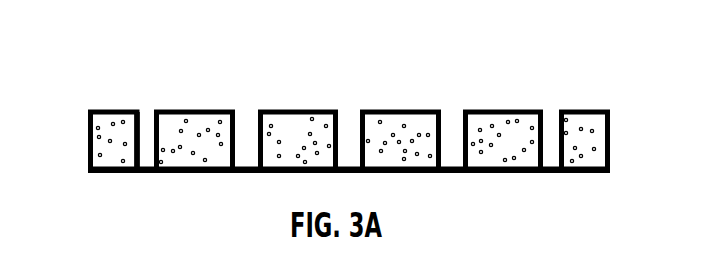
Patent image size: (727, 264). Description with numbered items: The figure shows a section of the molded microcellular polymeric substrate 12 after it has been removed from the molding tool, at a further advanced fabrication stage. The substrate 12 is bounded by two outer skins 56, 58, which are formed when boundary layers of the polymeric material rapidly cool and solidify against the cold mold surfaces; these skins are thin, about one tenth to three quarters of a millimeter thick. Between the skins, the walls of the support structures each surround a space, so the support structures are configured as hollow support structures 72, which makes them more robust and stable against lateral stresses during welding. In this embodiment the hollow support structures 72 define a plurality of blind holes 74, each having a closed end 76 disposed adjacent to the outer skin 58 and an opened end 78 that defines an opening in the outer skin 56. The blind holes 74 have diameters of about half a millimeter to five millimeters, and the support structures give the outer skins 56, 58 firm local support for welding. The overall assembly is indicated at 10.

The patterned article 10 is at (93, 32).
The molded microcellular polymeric substrate 12 is at (611, 138).
The outer skin 56 is at (107, 110).
The outer skin 58 is at (108, 174).
The hollow support structure 72 is at (143, 112).
The blind hole 74 is at (147, 109).
The closed end 76 is at (358, 166).
The opened end 78 is at (552, 109).